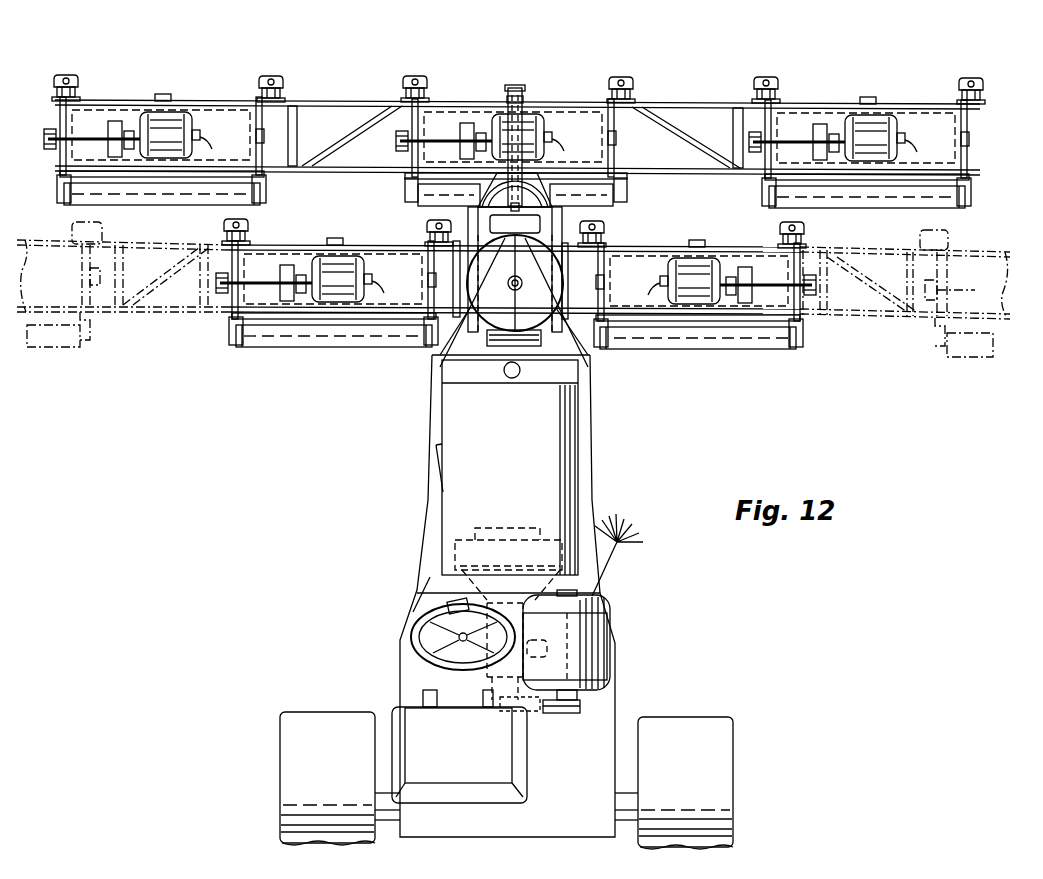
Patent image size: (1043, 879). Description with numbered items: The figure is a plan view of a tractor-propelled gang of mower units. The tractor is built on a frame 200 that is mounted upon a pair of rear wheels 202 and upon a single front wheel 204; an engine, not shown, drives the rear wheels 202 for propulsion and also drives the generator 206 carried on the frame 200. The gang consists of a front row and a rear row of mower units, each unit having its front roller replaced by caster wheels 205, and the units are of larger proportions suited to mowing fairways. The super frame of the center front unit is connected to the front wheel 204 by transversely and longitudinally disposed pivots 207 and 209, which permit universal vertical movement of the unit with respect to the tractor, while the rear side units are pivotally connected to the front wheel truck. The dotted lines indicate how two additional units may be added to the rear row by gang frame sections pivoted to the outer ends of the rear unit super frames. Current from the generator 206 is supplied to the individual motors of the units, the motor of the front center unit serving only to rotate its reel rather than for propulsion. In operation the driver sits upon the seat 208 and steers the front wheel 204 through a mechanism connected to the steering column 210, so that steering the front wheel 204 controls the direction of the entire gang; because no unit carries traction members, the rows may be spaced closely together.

The frame 200 is at (583, 443).
The rear wheels 202 is at (320, 726).
The front wheel 204 is at (458, 356).
The caster wheels 205 is at (79, 86).
The generator 206 is at (595, 640).
The pivot 207 is at (515, 276).
The seat 208 is at (492, 756).
The pivot 209 is at (548, 162).
The steering column 210 is at (452, 603).